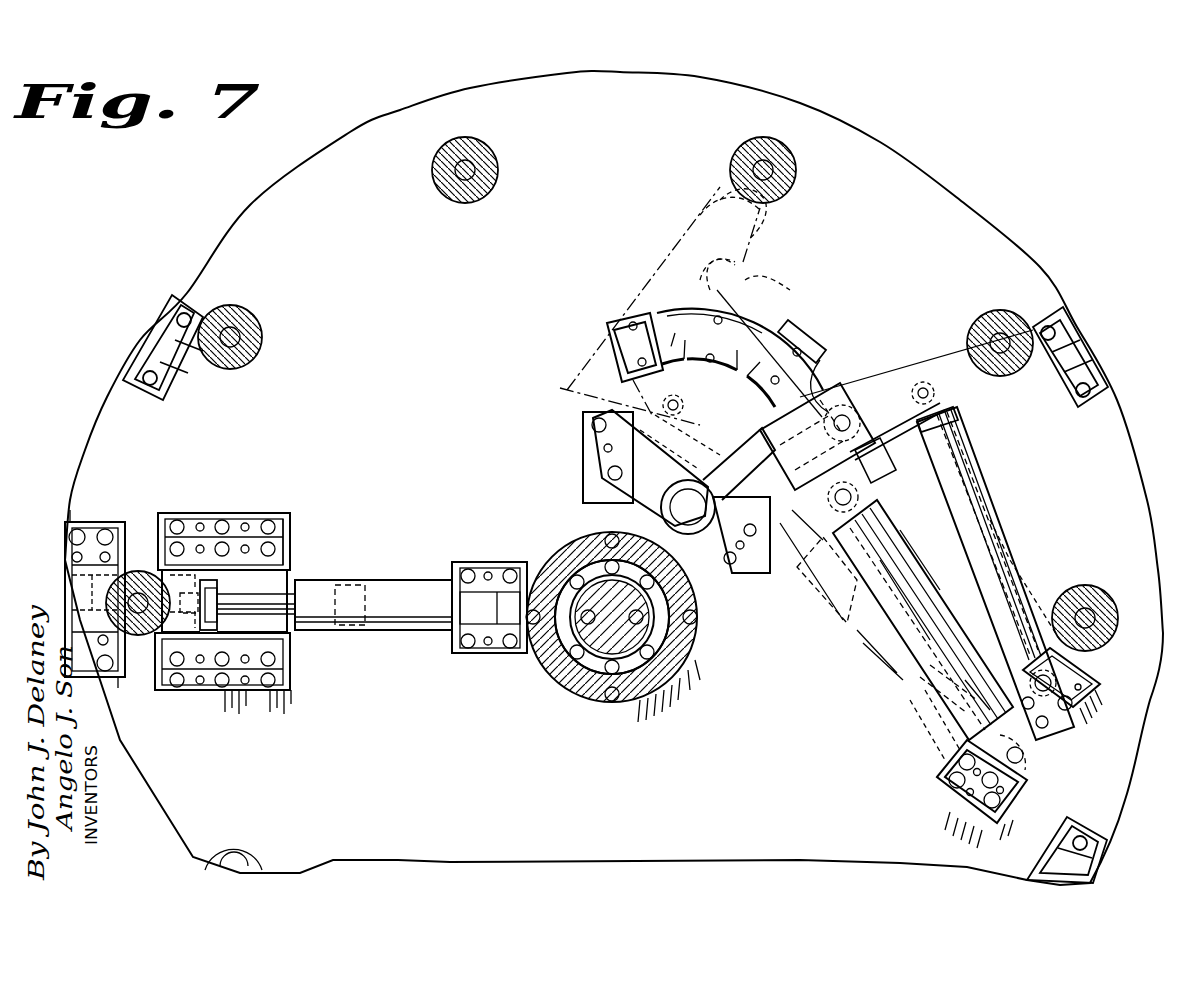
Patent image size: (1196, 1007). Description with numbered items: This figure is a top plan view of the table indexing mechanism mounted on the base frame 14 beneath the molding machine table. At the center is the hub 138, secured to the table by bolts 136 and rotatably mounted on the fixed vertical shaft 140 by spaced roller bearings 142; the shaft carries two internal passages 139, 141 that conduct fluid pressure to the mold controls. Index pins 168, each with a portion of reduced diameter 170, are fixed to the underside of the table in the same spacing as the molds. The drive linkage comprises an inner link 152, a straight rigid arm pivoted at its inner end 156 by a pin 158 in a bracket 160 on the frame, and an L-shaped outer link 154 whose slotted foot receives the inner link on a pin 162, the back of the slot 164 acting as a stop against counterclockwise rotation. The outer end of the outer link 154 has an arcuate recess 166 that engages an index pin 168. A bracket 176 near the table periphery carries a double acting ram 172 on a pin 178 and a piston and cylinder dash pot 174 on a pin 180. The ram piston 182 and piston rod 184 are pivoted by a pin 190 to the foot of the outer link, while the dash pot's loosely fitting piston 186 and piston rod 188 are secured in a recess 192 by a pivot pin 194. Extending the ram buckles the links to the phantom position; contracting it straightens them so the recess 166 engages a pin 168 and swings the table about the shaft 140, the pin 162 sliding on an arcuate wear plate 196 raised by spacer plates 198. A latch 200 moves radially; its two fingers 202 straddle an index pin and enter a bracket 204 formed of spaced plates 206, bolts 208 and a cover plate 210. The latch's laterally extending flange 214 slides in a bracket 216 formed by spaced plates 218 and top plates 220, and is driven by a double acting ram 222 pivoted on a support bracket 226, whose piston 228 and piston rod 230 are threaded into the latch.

The base frame 14 is at (252, 200).
The bolts 136 is at (632, 708).
The hub 138 is at (558, 695).
The internal passage 139 is at (568, 585).
The fixed vertical shaft 140 is at (700, 628).
The internal passage 141 is at (690, 607).
The roller bearings 142 is at (690, 660).
The inner link 152 is at (755, 444).
The outer link 154 is at (895, 347).
The inner end 156 is at (663, 509).
The pin 158 is at (743, 528).
The bracket 160 is at (850, 385).
The pin 162 is at (843, 414).
The back of the slot 164 is at (822, 360).
The arcuate recess 166 is at (772, 236).
The index pins 168 is at (120, 660).
The portion of reduced diameter 170 is at (1100, 595).
The double acting ram 172 is at (893, 627).
The piston and cylinder dash pot 174 is at (1000, 545).
The bracket 176 is at (1028, 790).
The pin 178 is at (1035, 766).
The pin 180 is at (1085, 672).
The piston 182 is at (942, 738).
The piston rod 184 is at (908, 698).
The loosely fitting piston 186 is at (1022, 585).
The piston rod 188 is at (995, 502).
The pin 190 is at (755, 476).
The recess 192 is at (925, 388).
The pivot pin 194 is at (865, 420).
The arcuate wear plate 196 is at (805, 324).
The spacer plates 198 is at (605, 322).
The latch 200 is at (185, 692).
The fingers 202 is at (72, 578).
The bracket 204 is at (112, 516).
The spaced plates 206 is at (118, 688).
The bolts 208 is at (69, 537).
The cover plate 210 is at (72, 557).
The laterally extending flange 214 is at (196, 518).
The bracket 216 is at (297, 512).
The spaced plates 218 is at (292, 686).
The top plates 220 is at (262, 692).
The double acting ram 222 is at (405, 580).
The support bracket 226 is at (462, 656).
The piston 228 is at (440, 622).
The piston rod 230 is at (290, 638).